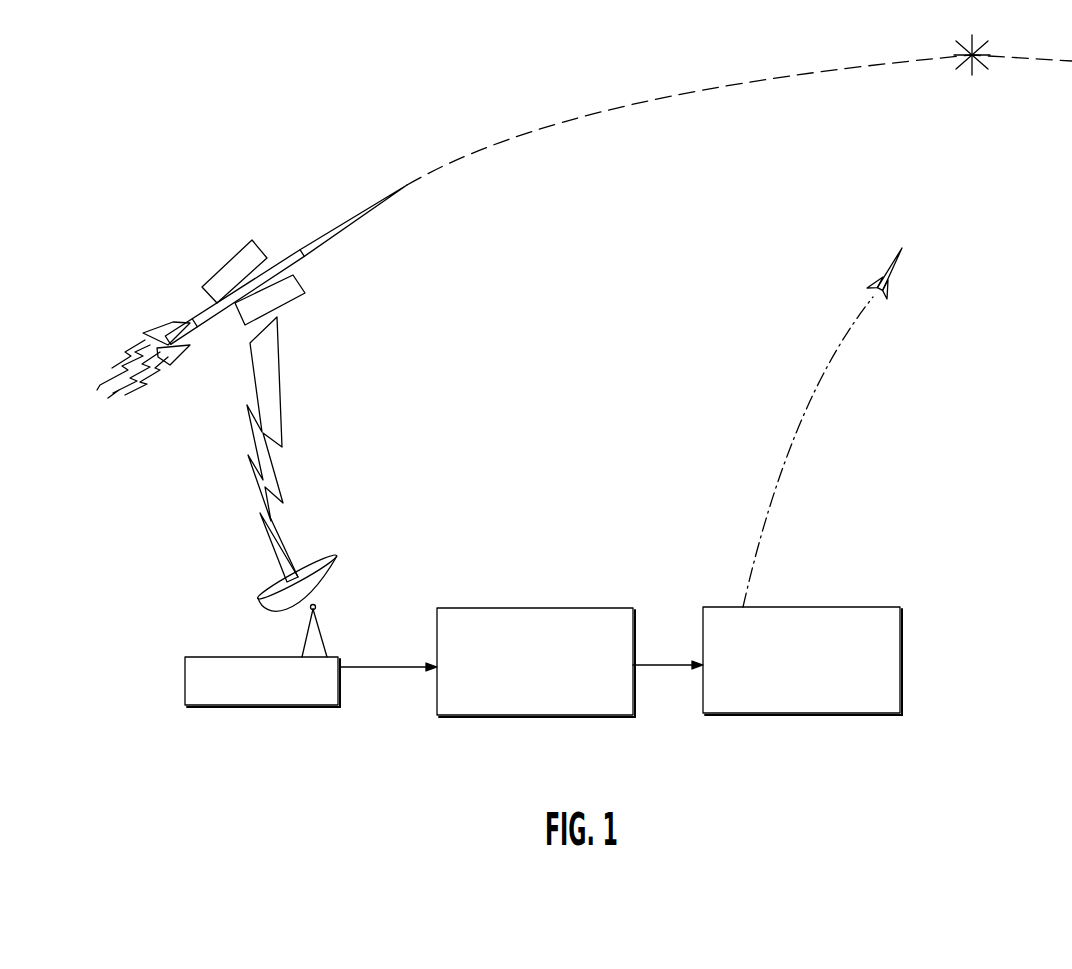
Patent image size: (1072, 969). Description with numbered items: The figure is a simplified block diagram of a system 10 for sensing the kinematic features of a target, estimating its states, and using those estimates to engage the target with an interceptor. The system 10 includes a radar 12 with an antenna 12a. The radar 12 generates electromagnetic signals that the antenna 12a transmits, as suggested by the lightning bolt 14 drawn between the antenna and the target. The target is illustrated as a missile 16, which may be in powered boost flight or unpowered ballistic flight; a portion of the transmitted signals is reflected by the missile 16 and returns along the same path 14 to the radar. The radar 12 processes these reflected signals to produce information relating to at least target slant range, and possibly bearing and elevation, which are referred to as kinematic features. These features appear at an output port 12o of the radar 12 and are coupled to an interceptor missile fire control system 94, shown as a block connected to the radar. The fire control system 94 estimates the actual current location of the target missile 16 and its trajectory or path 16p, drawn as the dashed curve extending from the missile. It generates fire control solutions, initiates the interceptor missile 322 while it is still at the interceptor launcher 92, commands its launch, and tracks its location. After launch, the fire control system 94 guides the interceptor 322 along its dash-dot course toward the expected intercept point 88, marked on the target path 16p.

The system 10 is at (140, 789).
The radar 12 is at (223, 657).
The antenna 12a is at (313, 557).
The output port 12o is at (342, 678).
The lightning bolt 14 is at (285, 437).
The missile 16 is at (252, 291).
The trajectory or path 16p is at (697, 92).
The expected intercept point 88 is at (967, 70).
The interceptor launcher 92 is at (818, 605).
The interceptor missile fire control system 94 is at (563, 607).
The interceptor missile 322 is at (898, 268).